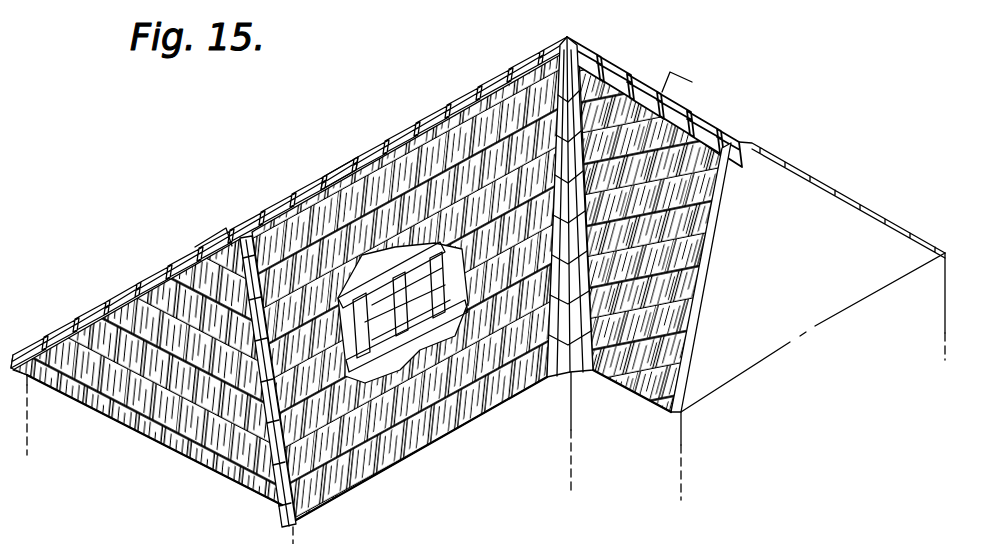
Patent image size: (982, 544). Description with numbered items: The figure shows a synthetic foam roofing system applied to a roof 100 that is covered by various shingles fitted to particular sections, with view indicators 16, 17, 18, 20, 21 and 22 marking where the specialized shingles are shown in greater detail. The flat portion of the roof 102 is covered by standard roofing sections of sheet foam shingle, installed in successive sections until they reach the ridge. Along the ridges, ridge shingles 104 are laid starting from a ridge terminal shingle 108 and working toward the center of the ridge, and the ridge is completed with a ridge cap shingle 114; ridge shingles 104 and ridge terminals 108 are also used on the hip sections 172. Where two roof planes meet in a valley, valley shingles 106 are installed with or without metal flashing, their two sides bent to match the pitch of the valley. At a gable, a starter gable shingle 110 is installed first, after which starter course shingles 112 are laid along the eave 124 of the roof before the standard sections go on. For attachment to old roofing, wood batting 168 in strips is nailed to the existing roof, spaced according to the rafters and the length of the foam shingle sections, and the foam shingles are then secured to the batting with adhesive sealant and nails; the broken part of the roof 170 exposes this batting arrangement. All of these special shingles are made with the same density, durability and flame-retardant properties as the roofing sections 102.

The roof 100 is at (517, 48).
The flat portion of the roof 102 is at (473, 97).
The ridge shingles 104 is at (643, 68).
The valley shingles 106 is at (552, 378).
The ridge terminal shingles 108 is at (238, 232).
The starter gable shingles 110 is at (690, 373).
The starter course shingles 112 is at (402, 447).
The ridge cap shingles 114 is at (336, 146).
The eave 124 is at (496, 543).
The wood batting 168 is at (318, 205).
The broken part of the roof 170 is at (266, 496).
The hip sections 172 is at (195, 447).
The section line 16 is at (690, 80).
The section line 17 is at (545, 366).
The section line 18 is at (230, 233).
The view arrow 20 is at (757, 238).
The view arrow 21 is at (400, 108).
The view arrow 22 is at (474, 452).